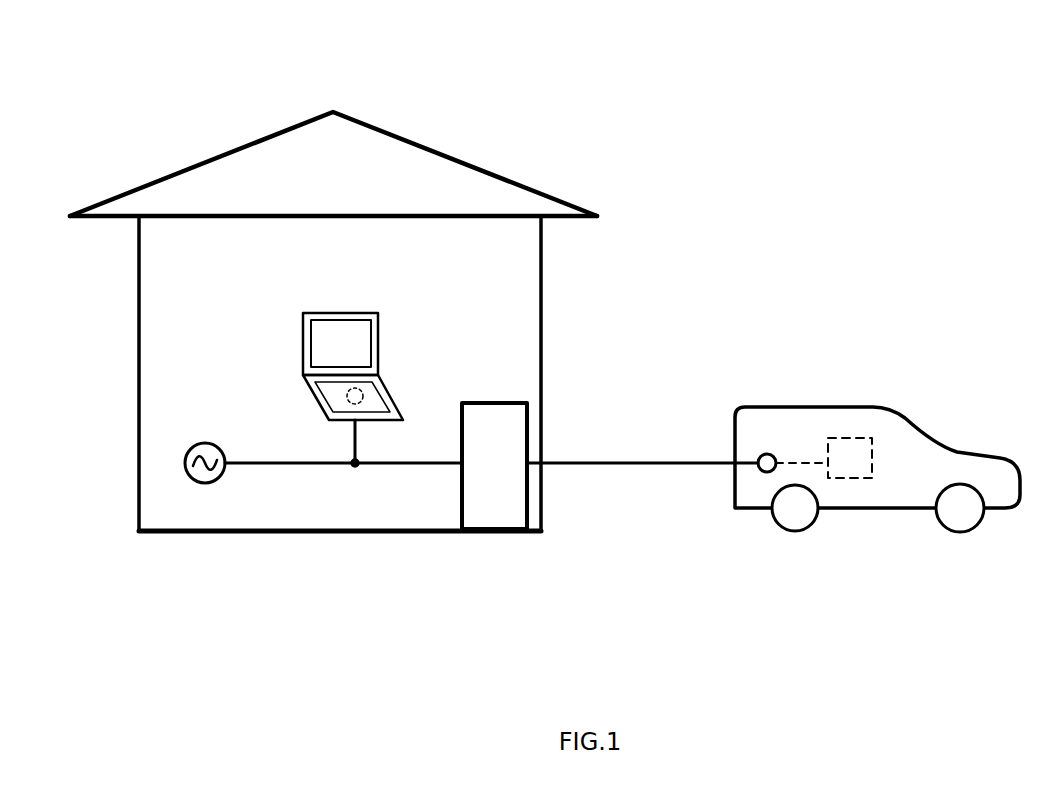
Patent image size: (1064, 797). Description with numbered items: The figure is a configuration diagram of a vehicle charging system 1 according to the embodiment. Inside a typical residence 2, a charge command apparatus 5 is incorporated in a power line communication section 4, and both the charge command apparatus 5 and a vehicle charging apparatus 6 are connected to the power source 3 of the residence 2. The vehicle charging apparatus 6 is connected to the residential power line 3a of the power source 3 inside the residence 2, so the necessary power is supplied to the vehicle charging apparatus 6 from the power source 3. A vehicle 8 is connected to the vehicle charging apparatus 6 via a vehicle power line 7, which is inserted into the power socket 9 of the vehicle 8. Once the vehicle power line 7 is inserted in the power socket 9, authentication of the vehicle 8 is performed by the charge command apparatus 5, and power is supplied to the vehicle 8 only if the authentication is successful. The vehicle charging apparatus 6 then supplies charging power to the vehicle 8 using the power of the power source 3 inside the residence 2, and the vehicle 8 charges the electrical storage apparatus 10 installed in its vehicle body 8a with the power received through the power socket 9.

The vehicle charging system 1 is at (692, 148).
The residence 2 is at (193, 165).
The power source 3 is at (200, 485).
The residential power line 3a is at (392, 502).
The power line communication section 4 is at (333, 403).
The charge command apparatus 5 is at (303, 313).
The vehicle charging apparatus 6 is at (494, 402).
The vehicle power line 7 is at (644, 465).
The vehicle 8 is at (965, 453).
The vehicle body 8a is at (873, 510).
The power socket 9 is at (765, 450).
The electrical storage apparatus 10 is at (850, 438).